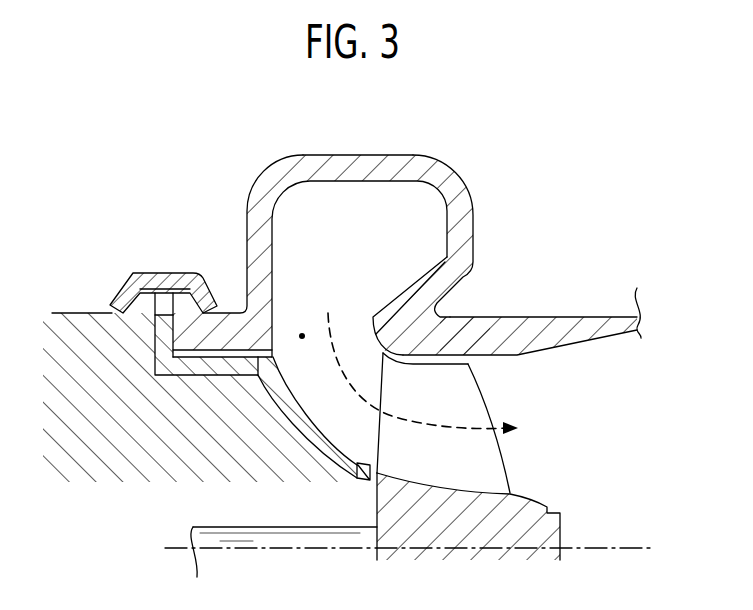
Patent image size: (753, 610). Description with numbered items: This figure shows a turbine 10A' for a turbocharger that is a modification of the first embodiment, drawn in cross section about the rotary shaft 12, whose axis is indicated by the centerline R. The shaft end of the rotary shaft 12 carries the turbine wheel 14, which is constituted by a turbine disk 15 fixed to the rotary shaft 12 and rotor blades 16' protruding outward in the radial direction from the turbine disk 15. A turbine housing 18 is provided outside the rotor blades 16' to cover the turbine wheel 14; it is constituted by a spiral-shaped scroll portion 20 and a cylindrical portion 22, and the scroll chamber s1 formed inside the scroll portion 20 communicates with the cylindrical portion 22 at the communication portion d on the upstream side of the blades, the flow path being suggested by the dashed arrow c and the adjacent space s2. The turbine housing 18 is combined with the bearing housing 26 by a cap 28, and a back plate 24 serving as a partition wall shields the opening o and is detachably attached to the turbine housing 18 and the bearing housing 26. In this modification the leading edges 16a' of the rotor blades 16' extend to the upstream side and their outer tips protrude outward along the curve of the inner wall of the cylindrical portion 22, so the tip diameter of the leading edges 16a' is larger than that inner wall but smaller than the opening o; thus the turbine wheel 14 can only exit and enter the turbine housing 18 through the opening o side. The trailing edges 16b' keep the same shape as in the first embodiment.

The turbine for a turbocharger 10A' is at (331, 334).
The rotary shaft 12 is at (192, 528).
The turbine wheel 14 is at (540, 474).
The turbine disk 15 is at (537, 500).
The rotor blades 16' is at (488, 423).
The leading edges 16a' is at (331, 491).
The trailing edges 16b' is at (534, 428).
The turbine housing 18 is at (381, 150).
The scroll portion 20 is at (325, 153).
The cylindrical portion 22 is at (538, 315).
The back plate 24 is at (158, 346).
The bearing housing 26 is at (80, 312).
The cap 28 is at (150, 270).
The scroll chamber s1 is at (349, 253).
The second space s2 is at (328, 411).
The fluid flow path c is at (348, 375).
The communication portion d is at (300, 335).
The opening o is at (207, 352).
The rotation axis R is at (612, 548).